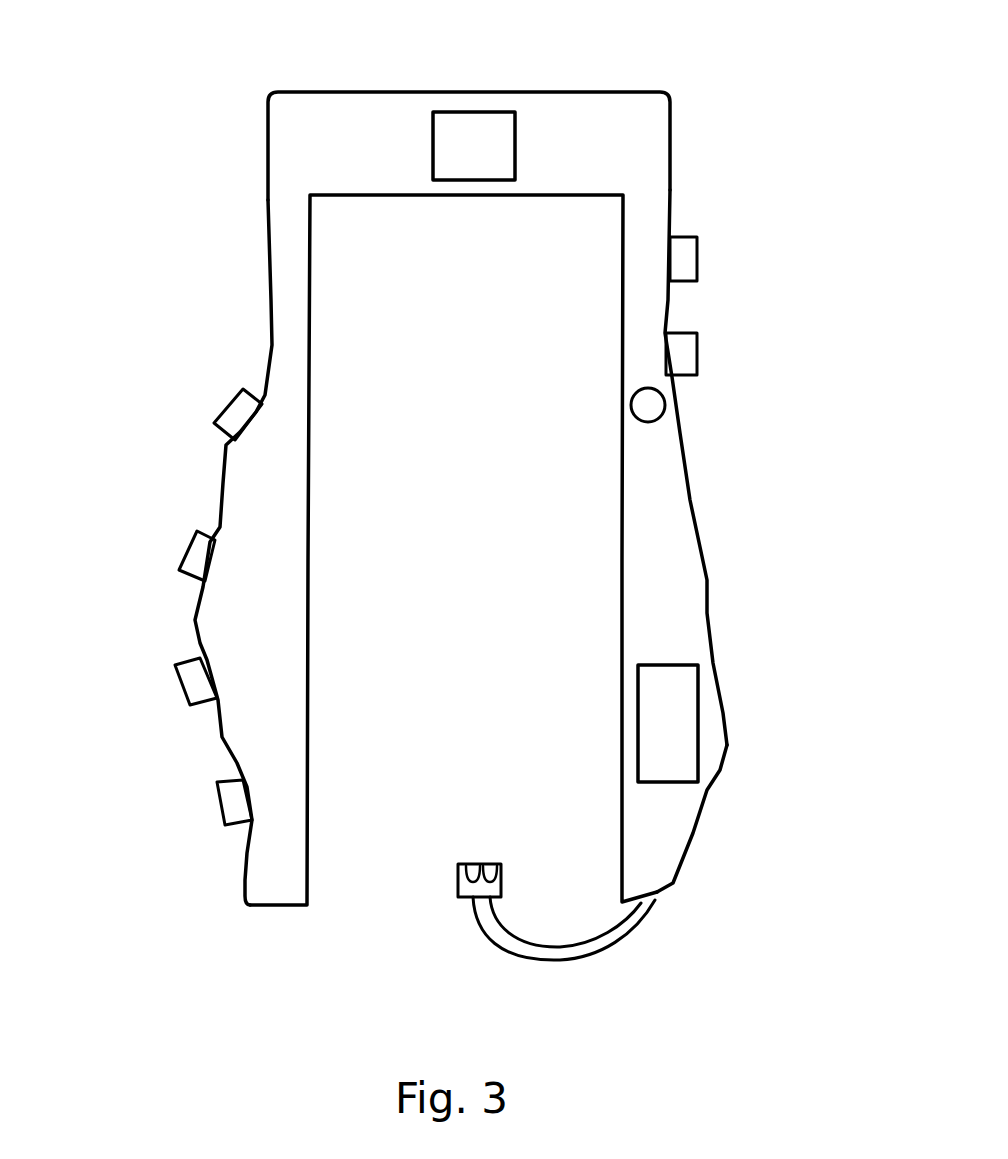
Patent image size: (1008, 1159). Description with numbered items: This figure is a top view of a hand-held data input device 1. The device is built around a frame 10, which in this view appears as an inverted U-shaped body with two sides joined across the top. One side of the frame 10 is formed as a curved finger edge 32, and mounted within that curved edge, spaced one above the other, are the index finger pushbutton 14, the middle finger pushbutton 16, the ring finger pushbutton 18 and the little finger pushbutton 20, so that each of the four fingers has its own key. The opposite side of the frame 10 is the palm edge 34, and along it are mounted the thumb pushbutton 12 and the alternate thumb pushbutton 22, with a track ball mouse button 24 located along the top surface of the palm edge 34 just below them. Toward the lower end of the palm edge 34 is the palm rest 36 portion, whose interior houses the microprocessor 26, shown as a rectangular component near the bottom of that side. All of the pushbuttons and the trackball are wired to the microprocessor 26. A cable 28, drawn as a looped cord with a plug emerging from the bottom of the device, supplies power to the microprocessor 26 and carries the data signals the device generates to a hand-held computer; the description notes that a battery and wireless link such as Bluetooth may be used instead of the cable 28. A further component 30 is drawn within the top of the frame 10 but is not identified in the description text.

The data input device 1 is at (268, 195).
The frame 10 is at (610, 157).
The thumb pushbutton 12 is at (678, 368).
The index finger pushbutton 14 is at (223, 408).
The middle finger pushbutton 16 is at (200, 550).
The ring finger pushbutton 18 is at (198, 680).
The little finger pushbutton 20 is at (237, 795).
The alternate thumb pushbutton 22 is at (685, 260).
The track ball mouse button 24 is at (647, 408).
The microprocessor 26 is at (667, 750).
The cable 28 is at (587, 953).
The neck module 30 is at (480, 143).
The curved finger edge 32 is at (230, 482).
The palm edge 34 is at (705, 570).
The palm rest 36 is at (727, 743).